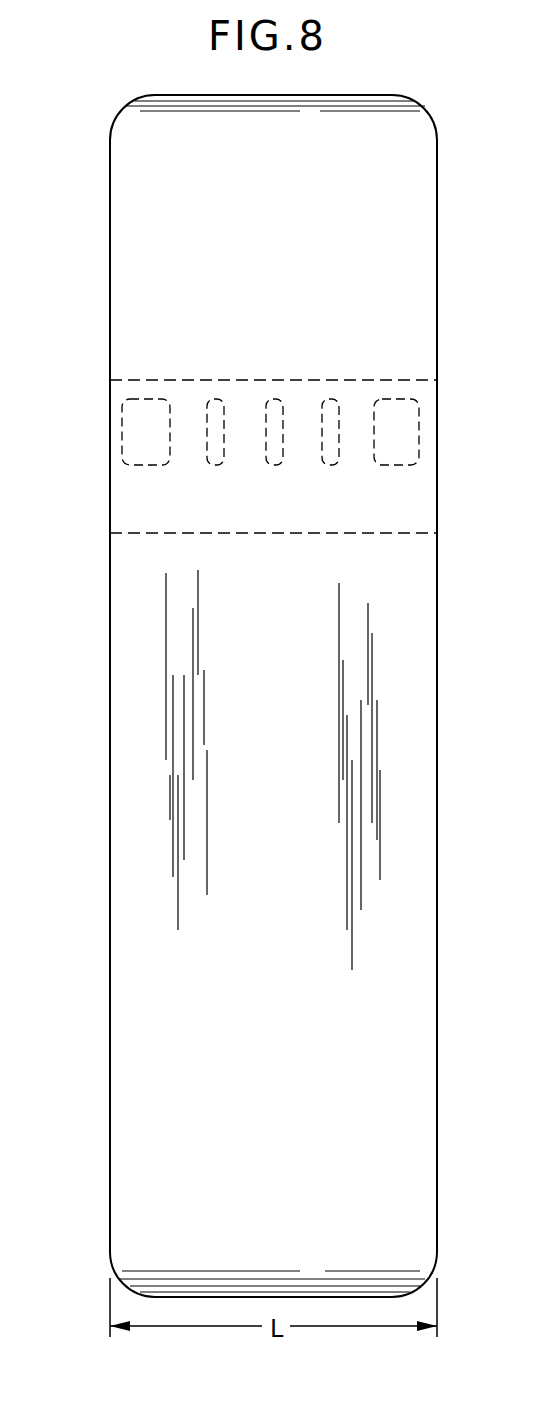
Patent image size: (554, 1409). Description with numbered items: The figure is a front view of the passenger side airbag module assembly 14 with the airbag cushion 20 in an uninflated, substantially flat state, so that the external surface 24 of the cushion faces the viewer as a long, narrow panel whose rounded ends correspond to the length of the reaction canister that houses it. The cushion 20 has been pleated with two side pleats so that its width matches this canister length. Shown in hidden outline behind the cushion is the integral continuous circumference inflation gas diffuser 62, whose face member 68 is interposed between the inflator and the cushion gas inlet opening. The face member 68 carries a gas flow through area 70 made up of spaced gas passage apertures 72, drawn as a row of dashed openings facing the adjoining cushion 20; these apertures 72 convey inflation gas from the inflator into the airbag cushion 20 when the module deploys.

The passenger side airbag module assembly 14 is at (92, 726).
The airbag cushion 20 is at (285, 778).
The external surface 24 is at (410, 893).
The inflation gas diffuser 62 is at (355, 423).
The face member 68 is at (187, 408).
The gas flow through area 70 is at (387, 403).
The gas passage apertures 72 is at (132, 400).